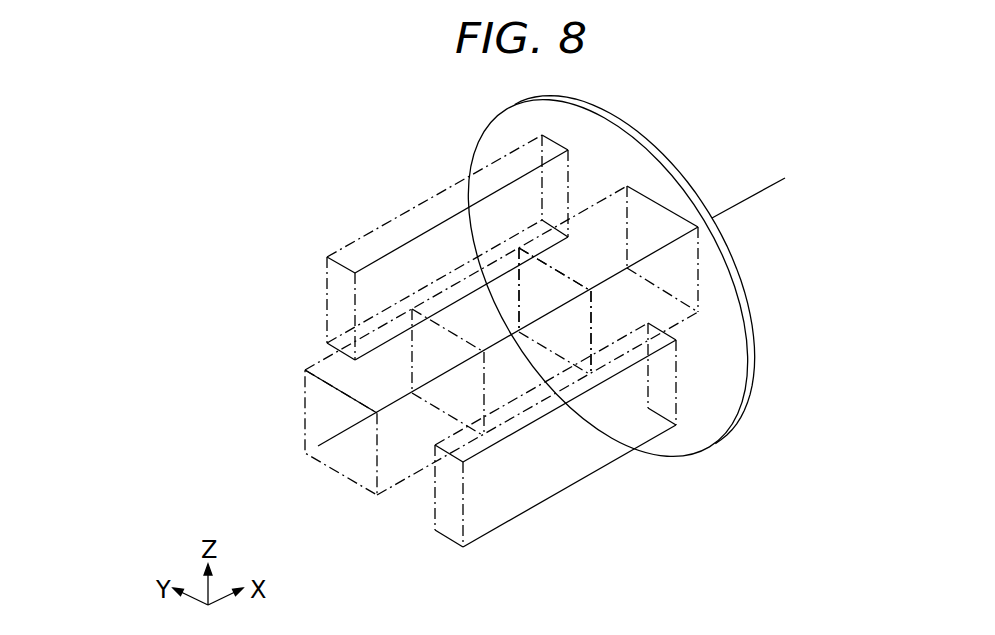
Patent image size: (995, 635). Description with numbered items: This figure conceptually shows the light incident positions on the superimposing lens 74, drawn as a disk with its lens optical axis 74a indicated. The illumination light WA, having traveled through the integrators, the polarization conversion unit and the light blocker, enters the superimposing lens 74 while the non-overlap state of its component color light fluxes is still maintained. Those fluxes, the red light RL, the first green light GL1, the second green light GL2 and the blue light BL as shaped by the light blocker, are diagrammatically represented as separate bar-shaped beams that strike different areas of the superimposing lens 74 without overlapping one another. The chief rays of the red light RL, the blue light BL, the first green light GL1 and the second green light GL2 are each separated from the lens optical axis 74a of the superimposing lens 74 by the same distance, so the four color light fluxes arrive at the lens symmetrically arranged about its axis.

The superimposing lens 74 is at (603, 145).
The lens optical axis 74a is at (747, 200).
The red light RL is at (547, 158).
The illumination light WA is at (258, 288).
The first green light GL1 is at (638, 210).
The second green light GL2 is at (563, 342).
The blue light BL is at (665, 385).